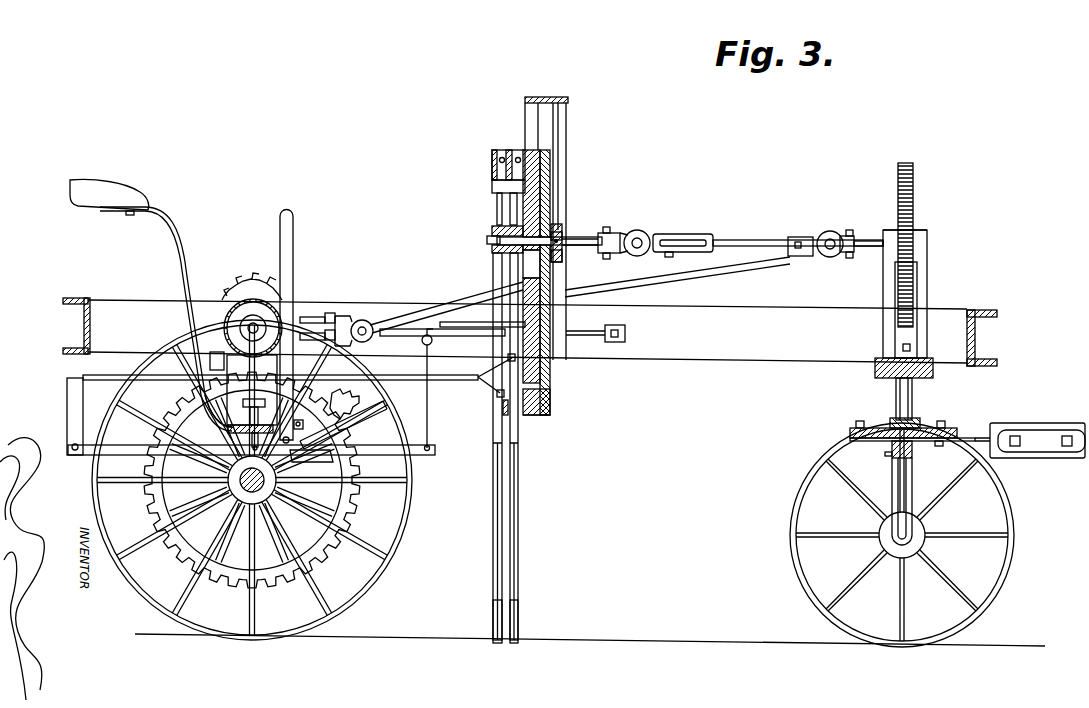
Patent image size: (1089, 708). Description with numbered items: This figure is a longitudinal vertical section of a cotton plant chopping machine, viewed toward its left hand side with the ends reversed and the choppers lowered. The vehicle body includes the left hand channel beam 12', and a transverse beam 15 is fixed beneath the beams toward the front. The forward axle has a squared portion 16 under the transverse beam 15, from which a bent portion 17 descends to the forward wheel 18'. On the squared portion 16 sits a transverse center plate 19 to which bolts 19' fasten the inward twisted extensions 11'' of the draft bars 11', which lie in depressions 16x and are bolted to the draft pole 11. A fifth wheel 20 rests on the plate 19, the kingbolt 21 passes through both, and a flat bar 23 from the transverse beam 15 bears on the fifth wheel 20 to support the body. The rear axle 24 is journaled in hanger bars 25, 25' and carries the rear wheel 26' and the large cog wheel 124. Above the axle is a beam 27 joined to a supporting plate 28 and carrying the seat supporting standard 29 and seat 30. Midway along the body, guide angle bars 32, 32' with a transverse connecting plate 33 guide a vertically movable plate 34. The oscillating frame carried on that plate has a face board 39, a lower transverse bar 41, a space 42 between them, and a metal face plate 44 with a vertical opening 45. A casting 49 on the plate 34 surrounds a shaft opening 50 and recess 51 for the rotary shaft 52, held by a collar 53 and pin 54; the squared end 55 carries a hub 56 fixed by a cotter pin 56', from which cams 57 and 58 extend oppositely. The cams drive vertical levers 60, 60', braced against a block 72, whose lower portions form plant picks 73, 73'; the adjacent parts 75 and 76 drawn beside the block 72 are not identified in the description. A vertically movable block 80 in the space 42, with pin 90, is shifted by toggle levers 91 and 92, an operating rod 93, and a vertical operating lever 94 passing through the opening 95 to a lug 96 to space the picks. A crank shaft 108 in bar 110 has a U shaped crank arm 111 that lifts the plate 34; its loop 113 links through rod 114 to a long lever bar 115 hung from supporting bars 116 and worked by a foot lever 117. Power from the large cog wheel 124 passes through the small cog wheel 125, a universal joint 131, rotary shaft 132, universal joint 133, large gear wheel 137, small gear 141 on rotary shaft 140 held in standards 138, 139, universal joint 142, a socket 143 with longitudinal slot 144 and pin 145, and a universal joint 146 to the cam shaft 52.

The draft pole 11 is at (1037, 427).
The draft bars 11' is at (1039, 421).
The inward twisted extensions 11'' is at (937, 455).
The channel beam 12' is at (530, 343).
The transverse beam 15 is at (875, 375).
The squared portion 16 is at (892, 460).
The depressions 16x is at (885, 455).
The bent portion 17 is at (890, 411).
The forward wheel 18' is at (917, 535).
The transverse center plate 19 is at (874, 439).
The bolts 19' is at (920, 419).
The fifth wheel 20 is at (856, 425).
The kingbolt 21 is at (898, 392).
The flat bar 23 is at (913, 396).
The rear axle 24 is at (268, 484).
The hanger bar 25 is at (311, 460).
The hanger bar 25' is at (211, 346).
The rear wheel 26' is at (260, 480).
The beam 27 is at (228, 429).
The supporting plate 28 is at (252, 390).
The seat supporting standard 29 is at (186, 262).
The seat 30 is at (118, 190).
The guide angle bar 32 is at (525, 166).
The guide angle bar 32' is at (576, 231).
The transverse connecting plate 33 is at (562, 97).
The vertically movable plate 34 is at (551, 190).
The face board 39 is at (553, 170).
The transverse bar 41 is at (550, 403).
The space 42 is at (540, 265).
The face plate 44 is at (540, 417).
The vertical opening 45 is at (523, 285).
The casting 49 is at (572, 233).
The shaft opening 50 is at (568, 238).
The recess 51 is at (560, 228).
The rotary shaft 52 is at (608, 233).
The collar 53 is at (562, 260).
The pin 54 is at (562, 252).
The reduced squared end 55 is at (492, 229).
The hub 56 is at (489, 257).
The cotter pin 56' is at (476, 242).
The cam 57 is at (497, 275).
The cam 58 is at (510, 218).
The vertical lever 60 is at (482, 541).
The vertical lever 60' is at (530, 541).
The block 72 is at (492, 186).
The plant pick 73 is at (479, 620).
The plant pick 73' is at (529, 620).
The bracket 75 is at (492, 158).
The bracket pin 76 is at (504, 150).
The vertically movable block 80 is at (549, 373).
The pin 90 is at (510, 326).
The toggle lever 91 is at (487, 368).
The toggle lever 92 is at (493, 425).
The operating rod 93 is at (346, 399).
The vertical operating lever 94 is at (294, 258).
The transverse opening 95 is at (303, 423).
The lug 96 is at (343, 423).
The crank shaft 108 is at (460, 336).
The bar 110 is at (616, 325).
The U shaped crank arm 111 is at (582, 331).
The loop 113 is at (420, 339).
The rod 114 is at (426, 390).
The long lever bar 115 is at (418, 455).
The supporting bar 116 is at (67, 418).
The foot lever 117 is at (201, 398).
The large cog wheel 124 is at (322, 556).
The small cog wheel 125 is at (250, 280).
The universal joint 131 is at (362, 318).
The rotary shaft 132 is at (708, 275).
The universal joint 133 is at (803, 258).
The large gear wheel 137 is at (914, 182).
The standard 138 is at (895, 290).
The standard 139 is at (918, 288).
The rotary shaft 140 is at (928, 248).
The small gear 141 is at (928, 225).
The universal joint 142 is at (836, 231).
The socket 143 is at (695, 234).
The longitudinal slot 144 is at (725, 234).
The pin 145 is at (669, 257).
The universal joint 146 is at (646, 234).